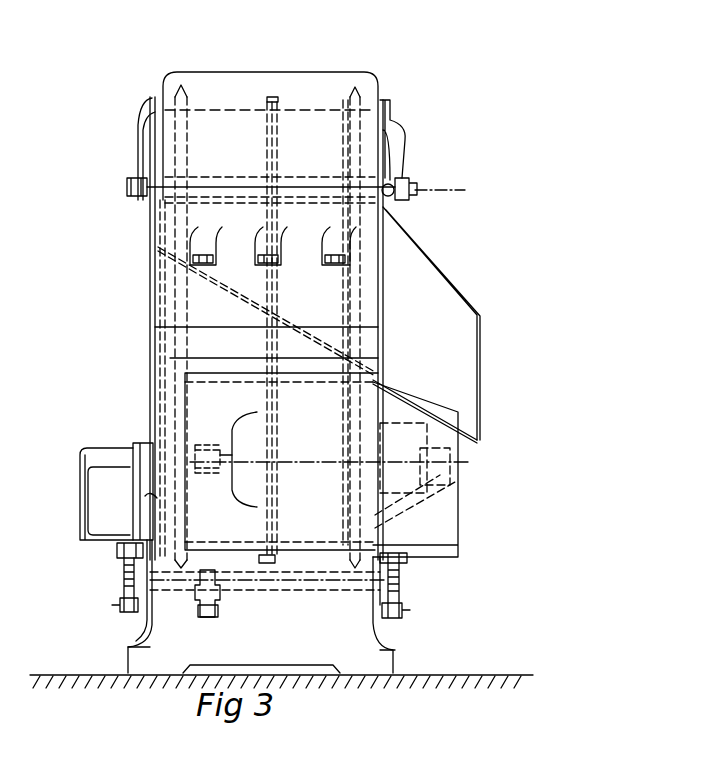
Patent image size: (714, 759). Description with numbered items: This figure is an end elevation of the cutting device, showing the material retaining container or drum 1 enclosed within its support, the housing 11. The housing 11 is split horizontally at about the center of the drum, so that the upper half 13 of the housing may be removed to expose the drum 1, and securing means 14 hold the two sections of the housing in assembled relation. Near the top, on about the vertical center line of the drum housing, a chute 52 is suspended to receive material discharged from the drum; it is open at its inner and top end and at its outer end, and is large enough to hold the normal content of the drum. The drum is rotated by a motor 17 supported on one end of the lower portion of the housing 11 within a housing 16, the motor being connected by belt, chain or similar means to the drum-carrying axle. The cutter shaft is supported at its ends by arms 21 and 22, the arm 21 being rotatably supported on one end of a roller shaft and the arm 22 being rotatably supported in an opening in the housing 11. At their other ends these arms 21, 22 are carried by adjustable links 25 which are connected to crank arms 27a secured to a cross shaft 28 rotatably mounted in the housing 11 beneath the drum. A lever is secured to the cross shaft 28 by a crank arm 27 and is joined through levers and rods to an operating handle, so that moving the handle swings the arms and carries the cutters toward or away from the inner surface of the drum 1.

The material retaining container or drum 1 is at (290, 120).
The upper half of the housing 13 is at (380, 82).
The securing means 14 is at (256, 241).
The chute 52 is at (463, 336).
The arm 22 is at (448, 536).
The motor 17 is at (450, 458).
The housing 16 is at (440, 497).
The arm 21 is at (90, 510).
The adjustable links 25 is at (124, 576).
The crank arms 27a is at (137, 612).
The crank arm 27 is at (200, 598).
The cross shaft 28 is at (284, 584).
The housing 11 is at (281, 614).